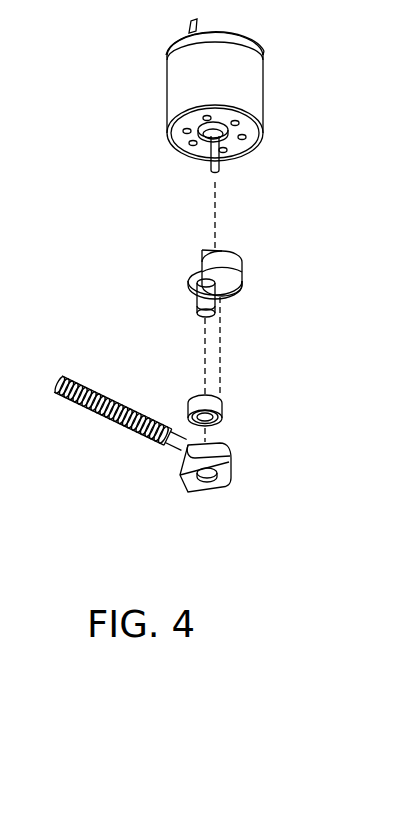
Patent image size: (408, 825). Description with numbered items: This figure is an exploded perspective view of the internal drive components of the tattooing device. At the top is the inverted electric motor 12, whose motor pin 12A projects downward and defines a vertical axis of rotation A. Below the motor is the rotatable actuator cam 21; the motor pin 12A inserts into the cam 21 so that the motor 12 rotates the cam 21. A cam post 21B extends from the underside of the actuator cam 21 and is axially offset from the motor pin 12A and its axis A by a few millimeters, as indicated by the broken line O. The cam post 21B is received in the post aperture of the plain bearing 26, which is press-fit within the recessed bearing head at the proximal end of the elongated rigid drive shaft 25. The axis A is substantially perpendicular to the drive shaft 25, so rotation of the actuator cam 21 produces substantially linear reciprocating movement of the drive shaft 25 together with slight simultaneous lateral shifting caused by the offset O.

The electric motor 12 is at (255, 91).
The motor pin 12A is at (209, 166).
The vertical axis of rotation A is at (215, 200).
The actuator cam 21 is at (233, 270).
The cam post 21B is at (199, 296).
The broken line indicating axial offset O is at (205, 348).
The plain bearing 26 is at (225, 403).
The drive shaft 25 is at (98, 415).